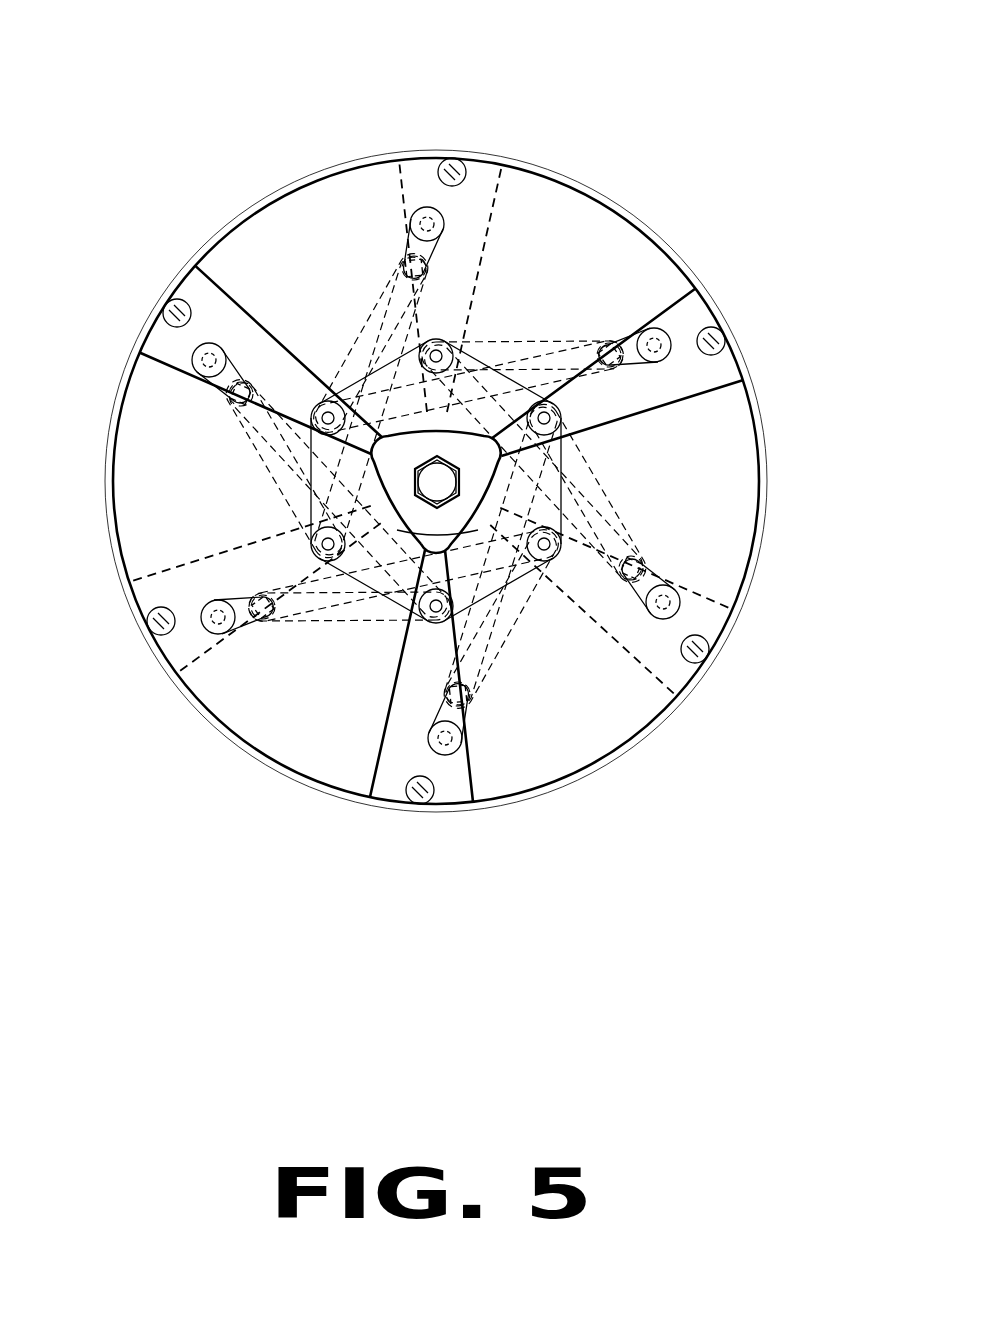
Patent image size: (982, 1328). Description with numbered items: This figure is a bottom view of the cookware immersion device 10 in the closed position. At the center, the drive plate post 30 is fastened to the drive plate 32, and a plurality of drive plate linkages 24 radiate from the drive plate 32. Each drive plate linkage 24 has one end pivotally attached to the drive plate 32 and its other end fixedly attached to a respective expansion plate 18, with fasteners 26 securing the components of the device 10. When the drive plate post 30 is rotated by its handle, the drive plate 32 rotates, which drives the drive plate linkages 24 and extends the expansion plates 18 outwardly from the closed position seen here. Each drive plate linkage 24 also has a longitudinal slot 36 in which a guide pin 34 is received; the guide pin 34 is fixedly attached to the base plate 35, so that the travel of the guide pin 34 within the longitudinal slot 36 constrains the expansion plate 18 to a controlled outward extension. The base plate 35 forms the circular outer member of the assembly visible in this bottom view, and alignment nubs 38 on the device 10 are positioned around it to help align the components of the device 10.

The cookware immersion device 10 is at (436, 402).
The expansion plate 18 is at (725, 425).
The drive plate linkage 24 is at (697, 293).
The fastener 26 is at (418, 223).
The drive plate post 30 is at (452, 494).
The drive plate 32 is at (437, 556).
The guide pin 34 is at (603, 347).
The base plate 35 is at (546, 170).
The longitudinal slot 36 is at (558, 368).
The alignment nub 38 is at (442, 163).